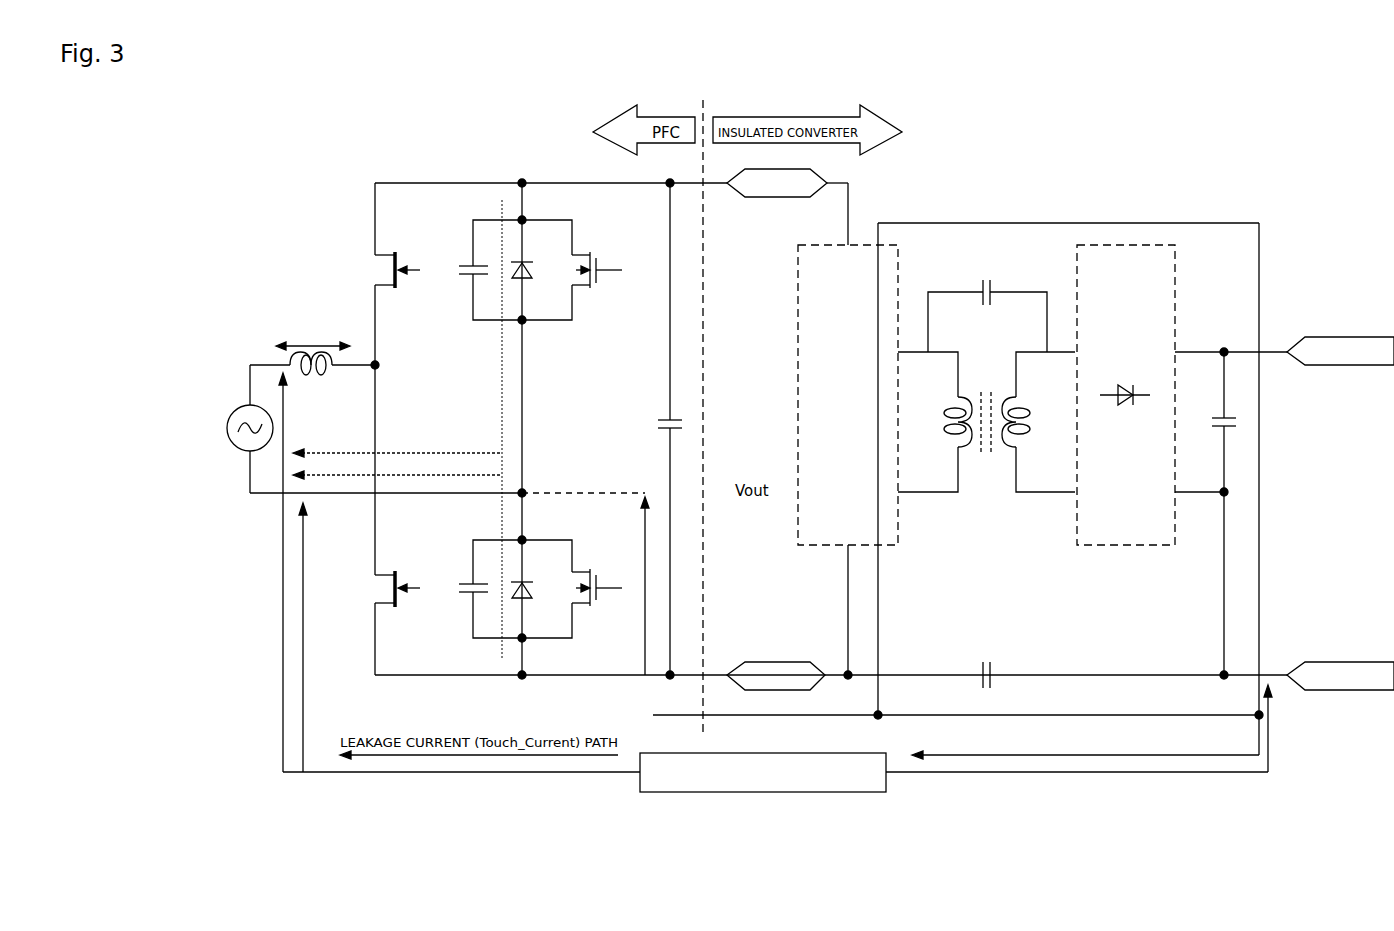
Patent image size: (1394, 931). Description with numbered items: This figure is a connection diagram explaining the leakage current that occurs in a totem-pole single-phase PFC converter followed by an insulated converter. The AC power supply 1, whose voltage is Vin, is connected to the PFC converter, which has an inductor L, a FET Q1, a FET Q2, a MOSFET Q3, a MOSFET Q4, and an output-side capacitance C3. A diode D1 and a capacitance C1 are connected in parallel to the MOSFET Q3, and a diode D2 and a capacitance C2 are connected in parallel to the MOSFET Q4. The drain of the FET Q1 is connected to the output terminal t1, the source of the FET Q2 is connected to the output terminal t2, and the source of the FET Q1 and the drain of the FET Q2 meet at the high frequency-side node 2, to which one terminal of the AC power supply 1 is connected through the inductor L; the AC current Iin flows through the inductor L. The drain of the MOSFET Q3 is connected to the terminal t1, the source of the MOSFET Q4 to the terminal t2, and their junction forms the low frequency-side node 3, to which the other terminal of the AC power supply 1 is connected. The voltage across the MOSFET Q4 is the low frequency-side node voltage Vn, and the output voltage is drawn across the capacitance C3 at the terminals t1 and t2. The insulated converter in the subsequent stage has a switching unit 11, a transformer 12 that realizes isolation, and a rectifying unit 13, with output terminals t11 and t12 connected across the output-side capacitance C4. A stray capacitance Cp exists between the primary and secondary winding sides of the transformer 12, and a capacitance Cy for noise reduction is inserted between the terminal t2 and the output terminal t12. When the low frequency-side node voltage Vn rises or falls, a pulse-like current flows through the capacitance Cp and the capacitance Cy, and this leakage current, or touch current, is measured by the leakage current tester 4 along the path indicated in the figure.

The AC power supply 1 is at (236, 406).
The high frequency-side node 2 is at (380, 365).
The low frequency-side node 3 is at (527, 488).
The leakage current tester 4 is at (760, 794).
The switching unit 11 is at (900, 250).
The transformer 12 is at (988, 452).
The rectifying unit 13 is at (1075, 252).
The output terminal t1 is at (777, 200).
The output terminal t2 is at (777, 661).
The output terminal t11 is at (1340, 370).
The output terminal t12 is at (1338, 659).
The FET Q1 is at (400, 254).
The FET Q2 is at (400, 574).
The MOSFET Q3 is at (598, 258).
The MOSFET Q4 is at (598, 575).
The capacitance C1 is at (459, 276).
The capacitance C2 is at (459, 596).
The capacitance C3 is at (662, 418).
The capacitance C4 is at (1214, 418).
The diode D1 is at (535, 272).
The diode D2 is at (535, 592).
The inductor L is at (310, 376).
The capacitance Cp is at (987, 278).
The capacitance Cy is at (987, 660).
The voltage Vin is at (254, 356).
The AC current Iin is at (313, 338).
The low frequency-side node voltage Vn is at (585, 574).